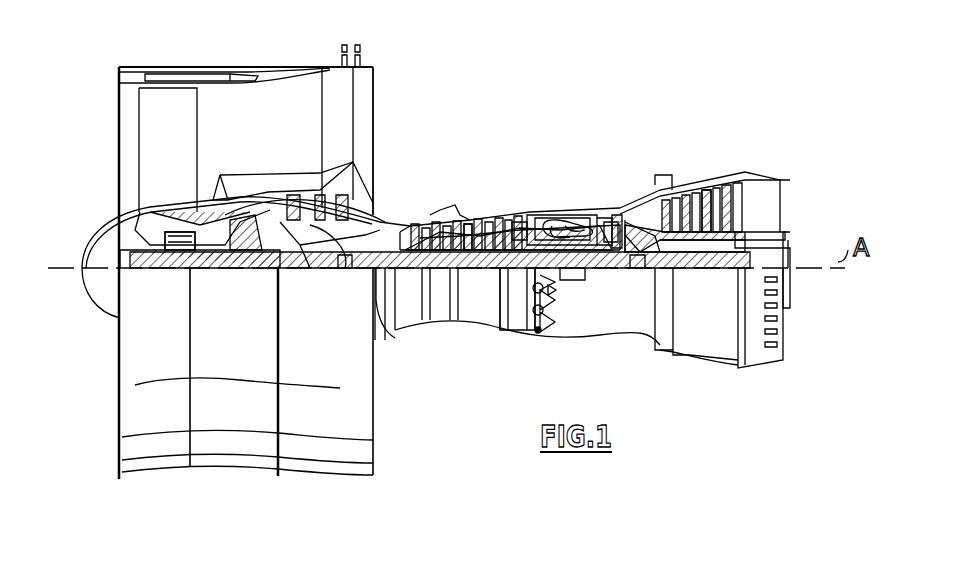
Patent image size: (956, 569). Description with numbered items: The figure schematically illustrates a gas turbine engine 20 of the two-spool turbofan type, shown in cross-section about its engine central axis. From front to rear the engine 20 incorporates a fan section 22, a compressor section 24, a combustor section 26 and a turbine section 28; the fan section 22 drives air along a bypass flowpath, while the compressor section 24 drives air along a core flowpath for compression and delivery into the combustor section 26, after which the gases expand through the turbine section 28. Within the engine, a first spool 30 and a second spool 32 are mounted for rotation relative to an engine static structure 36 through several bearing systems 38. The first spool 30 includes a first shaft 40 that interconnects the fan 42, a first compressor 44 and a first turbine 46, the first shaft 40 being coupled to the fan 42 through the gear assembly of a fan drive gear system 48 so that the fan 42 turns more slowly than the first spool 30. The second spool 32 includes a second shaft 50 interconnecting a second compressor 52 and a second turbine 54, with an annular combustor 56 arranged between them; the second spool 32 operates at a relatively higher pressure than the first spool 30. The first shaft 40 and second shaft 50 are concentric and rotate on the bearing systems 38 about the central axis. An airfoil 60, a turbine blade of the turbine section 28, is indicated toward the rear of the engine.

The gas turbine engine 20 is at (570, 104).
The fan section 22 is at (200, 64).
The compressor section 24 is at (412, 205).
The combustor section 26 is at (568, 192).
The turbine section 28 is at (670, 170).
The first spool 30 is at (486, 270).
The second spool 32 is at (517, 222).
The engine static structure 36 is at (513, 325).
The bearing systems 38 is at (344, 270).
The first shaft 40 is at (393, 318).
The fan 42 is at (181, 163).
The first compressor 44 is at (353, 162).
The first turbine 46 is at (702, 188).
The fan drive gear system 48 is at (250, 270).
The second shaft 50 is at (572, 270).
The second compressor 52 is at (465, 222).
The second turbine 54 is at (612, 222).
The annular combustor 56 is at (557, 228).
The airfoil 60 is at (742, 188).